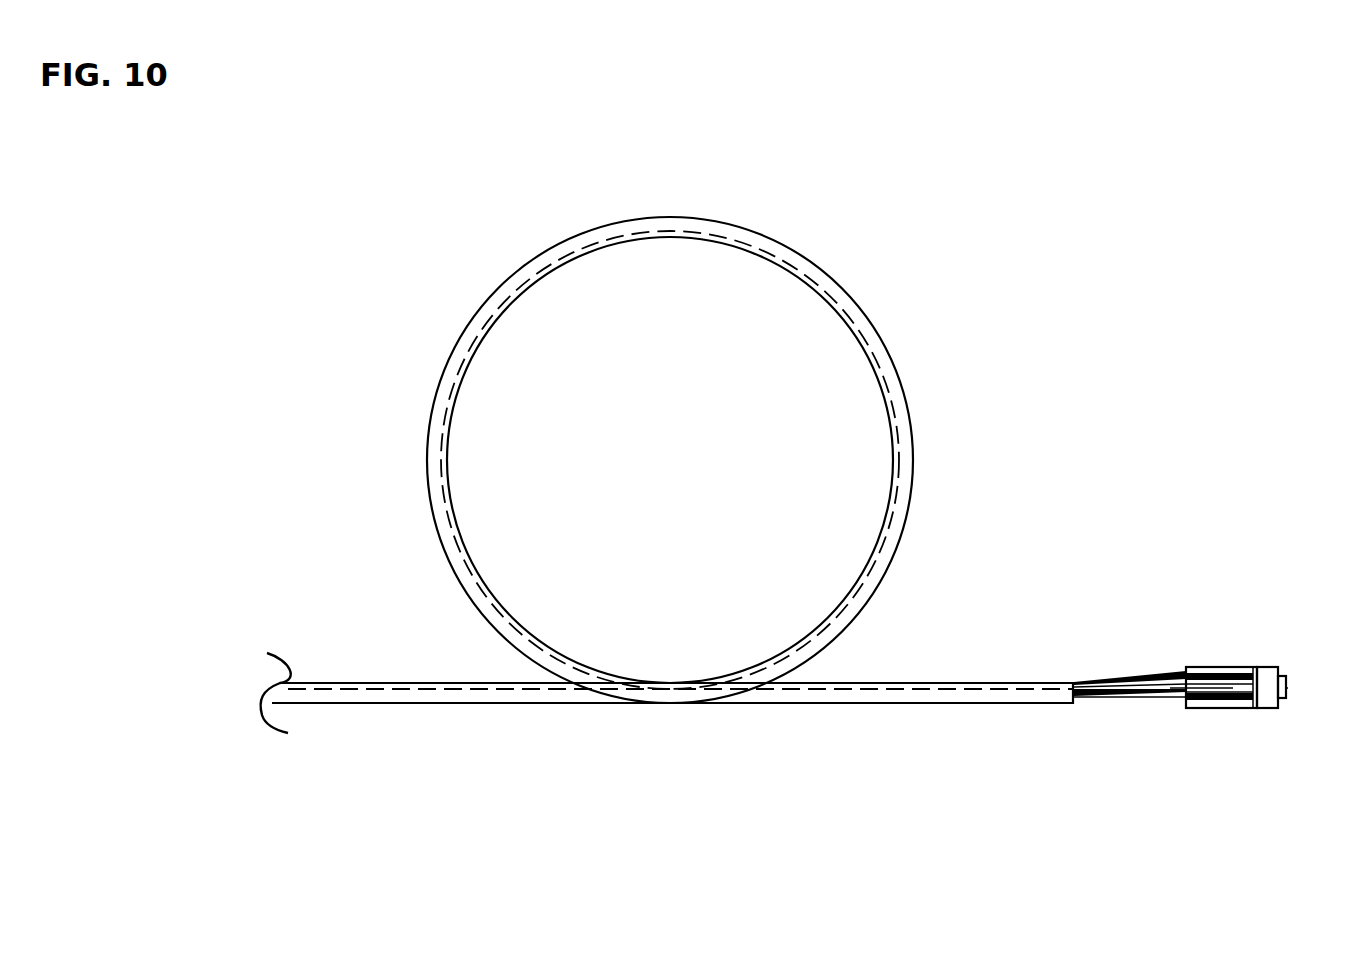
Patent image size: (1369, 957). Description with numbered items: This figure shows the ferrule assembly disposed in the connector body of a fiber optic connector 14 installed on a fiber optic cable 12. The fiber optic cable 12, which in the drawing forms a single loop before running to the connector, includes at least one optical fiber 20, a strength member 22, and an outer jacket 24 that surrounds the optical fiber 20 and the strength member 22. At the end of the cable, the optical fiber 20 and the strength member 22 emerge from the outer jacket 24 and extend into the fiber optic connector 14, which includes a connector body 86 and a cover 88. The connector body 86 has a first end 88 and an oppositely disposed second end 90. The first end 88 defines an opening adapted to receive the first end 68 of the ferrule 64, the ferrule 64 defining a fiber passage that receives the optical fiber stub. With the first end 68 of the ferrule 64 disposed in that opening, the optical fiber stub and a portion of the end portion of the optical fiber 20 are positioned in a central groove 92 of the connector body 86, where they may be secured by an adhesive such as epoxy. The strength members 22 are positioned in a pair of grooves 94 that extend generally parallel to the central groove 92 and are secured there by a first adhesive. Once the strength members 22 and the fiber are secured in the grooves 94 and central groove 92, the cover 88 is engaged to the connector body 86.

The fiber optic cable 12 is at (384, 475).
The fiber optic connector 14 is at (1253, 636).
The optical fiber 20 is at (1088, 685).
The strength member 22 is at (1133, 703).
The outer jacket 24 is at (920, 703).
The ferrule 64 is at (1300, 652).
The first end 68 is at (1288, 697).
The connector body 86 is at (1217, 633).
The cover 88 is at (1265, 708).
The second end 90 is at (1198, 708).
The central groove 92 is at (1200, 665).
The grooves 94 is at (1223, 708).